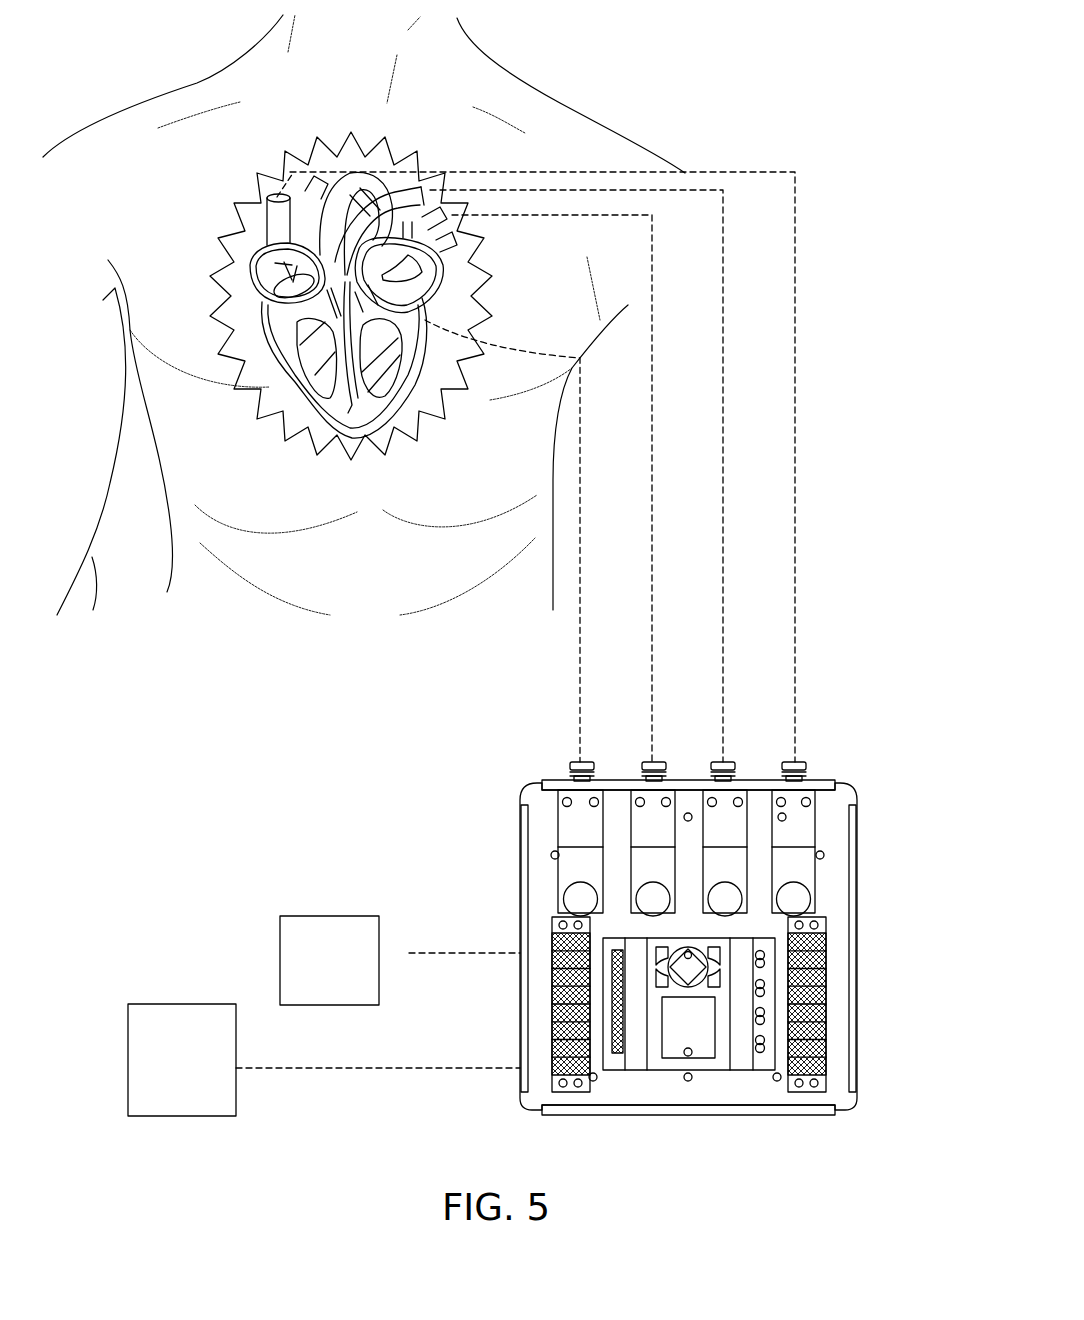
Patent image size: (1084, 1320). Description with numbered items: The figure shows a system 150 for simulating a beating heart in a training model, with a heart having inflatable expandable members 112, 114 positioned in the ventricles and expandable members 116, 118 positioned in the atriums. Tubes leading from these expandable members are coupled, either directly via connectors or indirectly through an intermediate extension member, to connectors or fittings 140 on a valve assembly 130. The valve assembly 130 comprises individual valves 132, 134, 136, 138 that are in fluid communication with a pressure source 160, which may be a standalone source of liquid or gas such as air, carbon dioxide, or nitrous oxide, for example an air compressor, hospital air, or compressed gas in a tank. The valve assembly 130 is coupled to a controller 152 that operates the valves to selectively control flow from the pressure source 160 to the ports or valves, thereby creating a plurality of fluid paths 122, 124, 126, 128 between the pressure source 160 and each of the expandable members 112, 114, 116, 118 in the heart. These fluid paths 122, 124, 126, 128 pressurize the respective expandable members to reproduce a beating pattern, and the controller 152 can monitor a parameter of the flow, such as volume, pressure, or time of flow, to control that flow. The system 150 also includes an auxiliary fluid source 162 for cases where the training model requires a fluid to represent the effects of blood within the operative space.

The expandable member 112 is at (352, 350).
The expandable member 114 is at (370, 378).
The expandable member 116 is at (290, 275).
The expandable member 118 is at (480, 249).
The fluid path 122 is at (723, 395).
The fluid path 124 is at (582, 713).
The fluid path 126 is at (795, 293).
The fluid path 128 is at (652, 497).
The valve assembly 130 is at (706, 813).
The valve 132 is at (730, 822).
The valve 134 is at (568, 837).
The valve 136 is at (795, 827).
The valve 138 is at (648, 817).
The connector or fitting 140 is at (737, 767).
The system 150 is at (708, 937).
The controller 152 is at (677, 1052).
The pressure source 160 is at (328, 935).
The fluid source 162 is at (187, 1095).